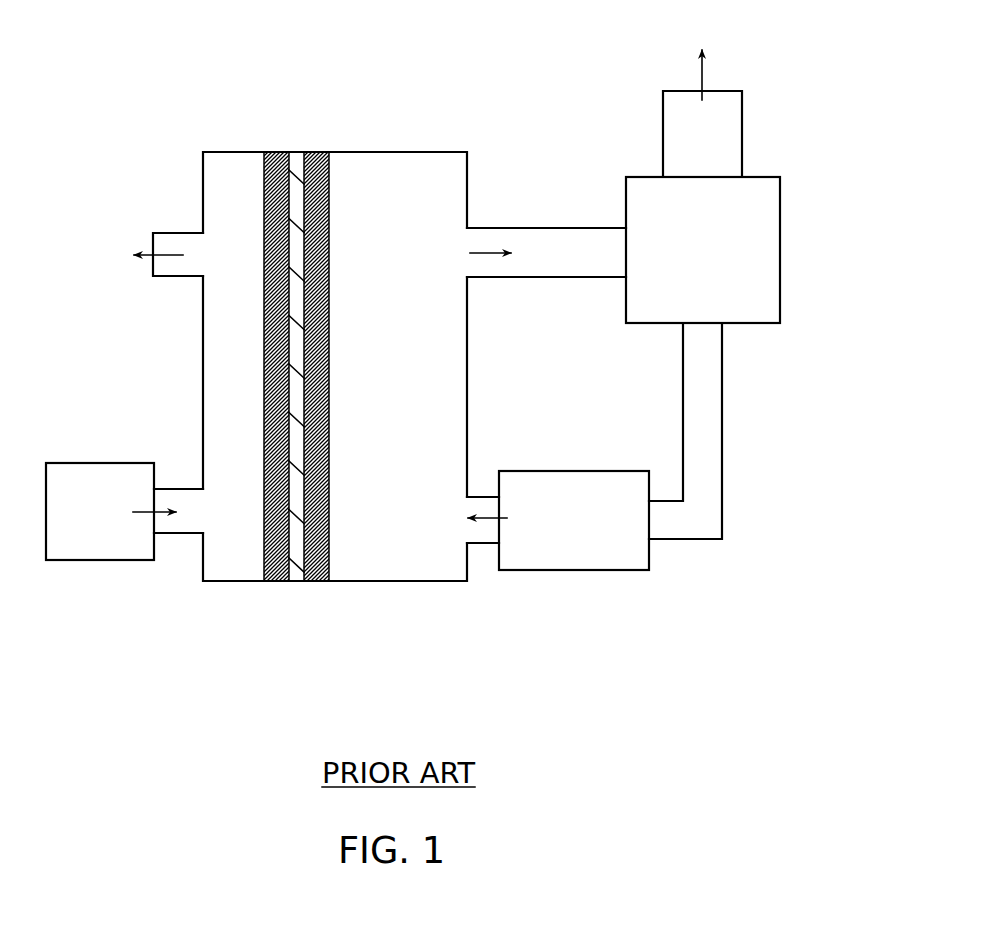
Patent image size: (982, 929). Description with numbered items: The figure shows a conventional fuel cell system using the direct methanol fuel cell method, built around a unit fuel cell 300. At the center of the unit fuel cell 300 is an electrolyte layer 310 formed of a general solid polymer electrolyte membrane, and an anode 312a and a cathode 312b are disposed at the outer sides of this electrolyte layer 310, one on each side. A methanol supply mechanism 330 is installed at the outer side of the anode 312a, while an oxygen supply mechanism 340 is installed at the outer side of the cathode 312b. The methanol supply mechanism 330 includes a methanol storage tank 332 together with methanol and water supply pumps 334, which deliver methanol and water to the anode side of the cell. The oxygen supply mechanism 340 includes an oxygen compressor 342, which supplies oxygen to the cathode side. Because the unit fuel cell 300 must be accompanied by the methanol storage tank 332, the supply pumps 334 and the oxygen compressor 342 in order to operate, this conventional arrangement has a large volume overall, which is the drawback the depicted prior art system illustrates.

The unit fuel cell 300 is at (305, 628).
The electrolyte layer 310 is at (296, 153).
The anode 312a is at (317, 152).
The cathode 312b is at (279, 152).
The methanol supply mechanism 330 is at (752, 434).
The methanol storage tank 332 is at (780, 284).
The methanol and water supply pumps 334 is at (588, 573).
The oxygen supply mechanism 340 is at (142, 306).
The oxygen compressor 342 is at (83, 551).